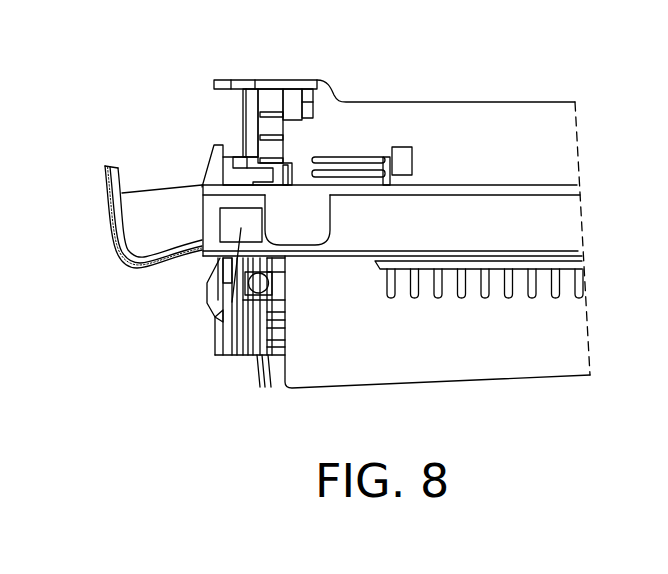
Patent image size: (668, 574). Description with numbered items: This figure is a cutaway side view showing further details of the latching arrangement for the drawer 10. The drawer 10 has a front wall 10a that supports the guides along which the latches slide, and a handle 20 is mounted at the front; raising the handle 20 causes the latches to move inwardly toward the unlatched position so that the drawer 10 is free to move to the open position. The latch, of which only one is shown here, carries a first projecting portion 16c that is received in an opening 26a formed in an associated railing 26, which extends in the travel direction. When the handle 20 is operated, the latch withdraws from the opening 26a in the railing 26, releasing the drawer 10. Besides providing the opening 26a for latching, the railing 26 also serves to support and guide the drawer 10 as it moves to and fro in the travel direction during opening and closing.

The drawer 10 is at (403, 116).
The front wall 10a is at (242, 122).
The handle 20 is at (115, 272).
The railing 26 is at (569, 221).
The opening 26a is at (213, 276).
The first projecting portion 16c is at (217, 318).